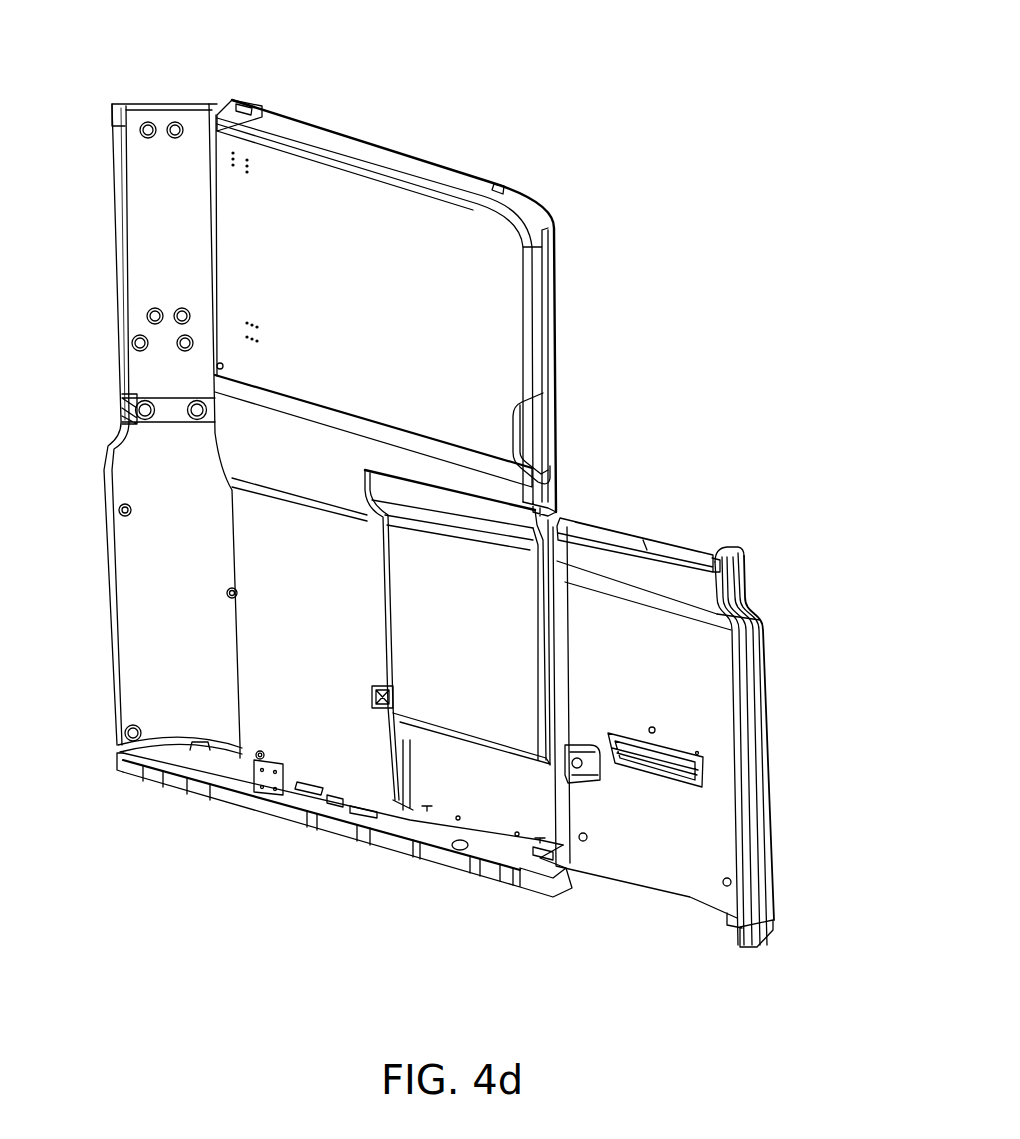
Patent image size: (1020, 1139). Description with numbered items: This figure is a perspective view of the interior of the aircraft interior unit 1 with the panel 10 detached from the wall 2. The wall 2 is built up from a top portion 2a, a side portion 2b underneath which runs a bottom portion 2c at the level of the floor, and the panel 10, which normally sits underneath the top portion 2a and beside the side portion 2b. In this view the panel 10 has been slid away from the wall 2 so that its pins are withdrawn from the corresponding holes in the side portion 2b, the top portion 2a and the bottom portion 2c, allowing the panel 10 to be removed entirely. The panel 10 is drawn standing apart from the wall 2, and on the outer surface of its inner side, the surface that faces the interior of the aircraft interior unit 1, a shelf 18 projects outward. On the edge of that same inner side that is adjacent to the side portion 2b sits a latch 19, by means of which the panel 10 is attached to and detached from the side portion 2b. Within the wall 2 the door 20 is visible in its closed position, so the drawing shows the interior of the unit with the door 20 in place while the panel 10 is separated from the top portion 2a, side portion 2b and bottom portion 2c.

The aircraft interior unit 1 is at (576, 100).
The wall 2 is at (639, 264).
The top portion 2a is at (440, 292).
The side portion 2b is at (327, 633).
The bottom portion 2c is at (440, 820).
The panel 10 is at (712, 832).
The shelf 18 is at (644, 745).
The latch 19 is at (587, 785).
The door 20 is at (495, 690).